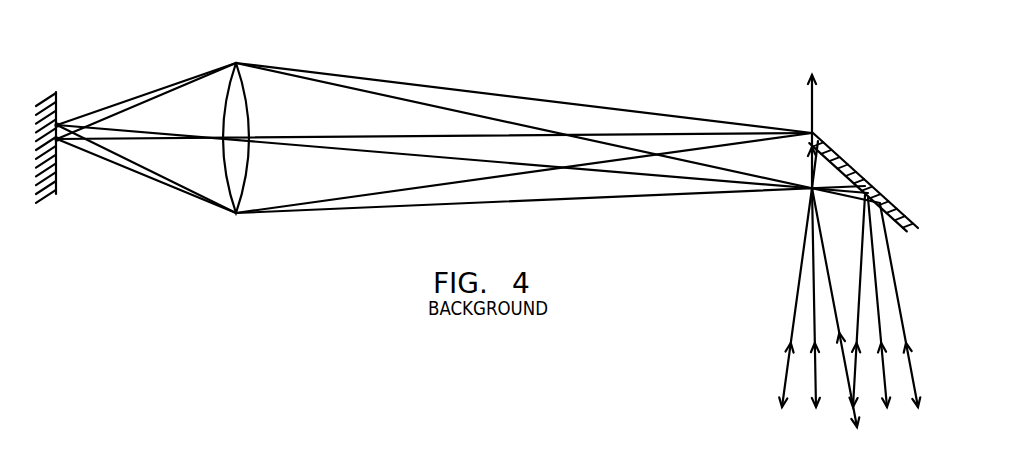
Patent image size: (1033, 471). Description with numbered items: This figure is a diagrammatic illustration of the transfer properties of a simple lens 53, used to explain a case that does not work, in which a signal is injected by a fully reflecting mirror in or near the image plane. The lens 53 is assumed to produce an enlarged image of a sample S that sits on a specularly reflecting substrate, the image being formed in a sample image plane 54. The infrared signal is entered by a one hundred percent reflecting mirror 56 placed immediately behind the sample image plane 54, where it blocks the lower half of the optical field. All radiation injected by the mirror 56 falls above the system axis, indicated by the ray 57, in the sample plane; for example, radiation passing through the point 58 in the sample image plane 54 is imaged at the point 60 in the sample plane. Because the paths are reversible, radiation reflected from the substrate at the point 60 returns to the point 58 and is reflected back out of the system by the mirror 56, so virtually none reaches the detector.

The point in the sample plane 60 is at (58, 125).
The sample S is at (61, 141).
The simple lens 53 is at (246, 90).
The ray 57 is at (482, 138).
The sample image plane 54 is at (790, 126).
The 100% reflecting mirror 56 is at (848, 156).
The point in the sample image plane 58 is at (809, 191).